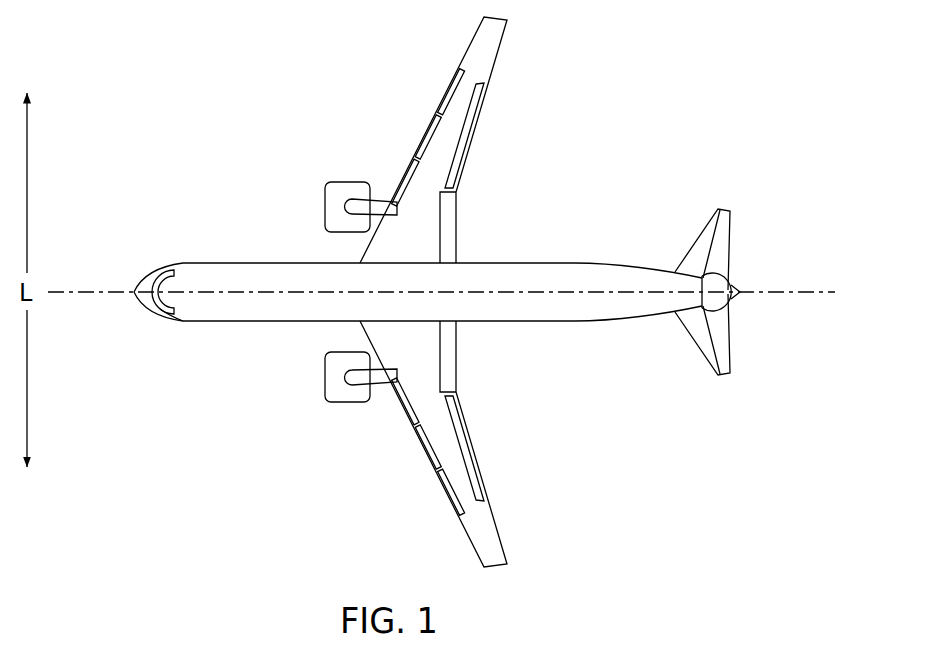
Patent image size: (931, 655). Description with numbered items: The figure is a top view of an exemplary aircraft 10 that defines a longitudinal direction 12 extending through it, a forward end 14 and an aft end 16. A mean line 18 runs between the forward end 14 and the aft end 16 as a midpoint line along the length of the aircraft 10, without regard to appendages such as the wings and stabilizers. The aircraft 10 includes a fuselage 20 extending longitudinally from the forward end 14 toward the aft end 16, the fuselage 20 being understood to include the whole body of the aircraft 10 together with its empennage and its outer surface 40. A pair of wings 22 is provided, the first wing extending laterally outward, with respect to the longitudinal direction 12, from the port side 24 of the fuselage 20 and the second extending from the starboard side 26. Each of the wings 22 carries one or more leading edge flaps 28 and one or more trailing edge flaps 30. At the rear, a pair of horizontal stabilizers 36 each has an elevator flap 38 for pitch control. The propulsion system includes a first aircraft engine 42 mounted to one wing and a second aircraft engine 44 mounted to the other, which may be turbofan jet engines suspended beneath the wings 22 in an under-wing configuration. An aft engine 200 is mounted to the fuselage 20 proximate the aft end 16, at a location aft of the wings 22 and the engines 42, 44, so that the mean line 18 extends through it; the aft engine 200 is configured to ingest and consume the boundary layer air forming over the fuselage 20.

The aircraft 10 is at (612, 104).
The longitudinal direction 12 is at (62, 289).
The forward end 14 is at (149, 296).
The aft end 16 is at (735, 308).
The mean line 18 is at (184, 261).
The fuselage 20 is at (184, 323).
The wings 22 is at (462, 292).
The port side 24 is at (252, 327).
The starboard side 26 is at (254, 258).
The leading edge flaps 28 is at (426, 457).
The trailing edge flaps 30 is at (477, 456).
The horizontal stabilizers 36 is at (718, 285).
The elevator flap 38 is at (734, 222).
The outer surface 40 is at (442, 296).
The first aircraft engine 42 is at (340, 412).
The second aircraft engine 44 is at (337, 177).
The aft engine 200 is at (737, 267).